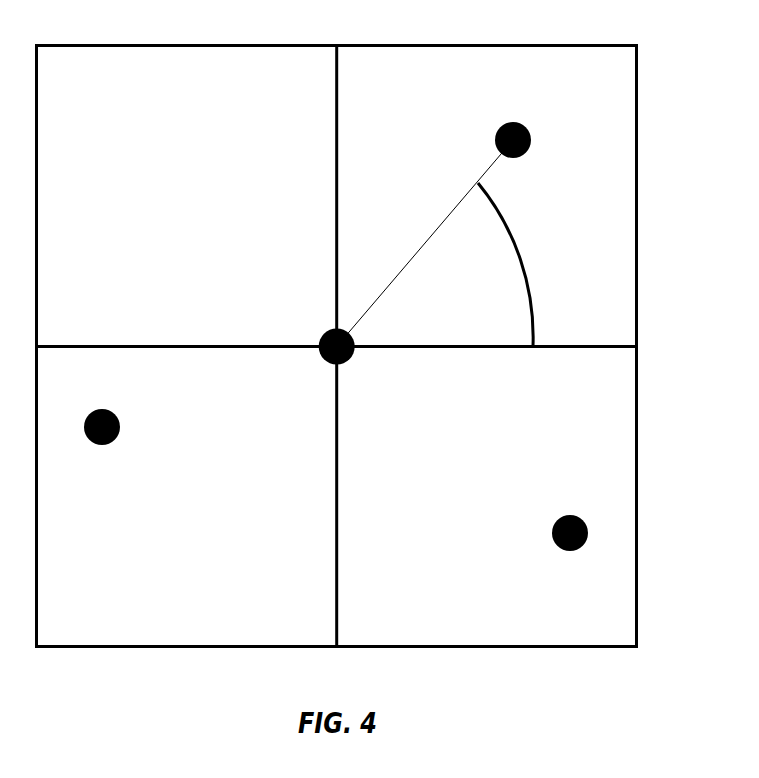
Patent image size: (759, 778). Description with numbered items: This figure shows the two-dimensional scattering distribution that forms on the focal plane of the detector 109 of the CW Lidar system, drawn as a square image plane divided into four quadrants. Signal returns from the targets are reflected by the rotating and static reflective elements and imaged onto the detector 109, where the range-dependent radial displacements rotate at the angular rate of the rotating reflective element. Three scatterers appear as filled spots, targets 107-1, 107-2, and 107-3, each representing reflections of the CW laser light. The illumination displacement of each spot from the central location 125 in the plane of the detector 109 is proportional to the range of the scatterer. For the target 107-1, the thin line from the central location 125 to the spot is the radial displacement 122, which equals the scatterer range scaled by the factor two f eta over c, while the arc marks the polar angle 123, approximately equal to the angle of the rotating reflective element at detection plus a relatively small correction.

The detector 109 is at (637, 152).
The radial displacement of the image 122 is at (422, 248).
The polar angle of the image 123 is at (527, 282).
The central location 125 is at (320, 338).
The target 107-1 is at (533, 140).
The target 107-2 is at (588, 535).
The target 107-3 is at (120, 428).